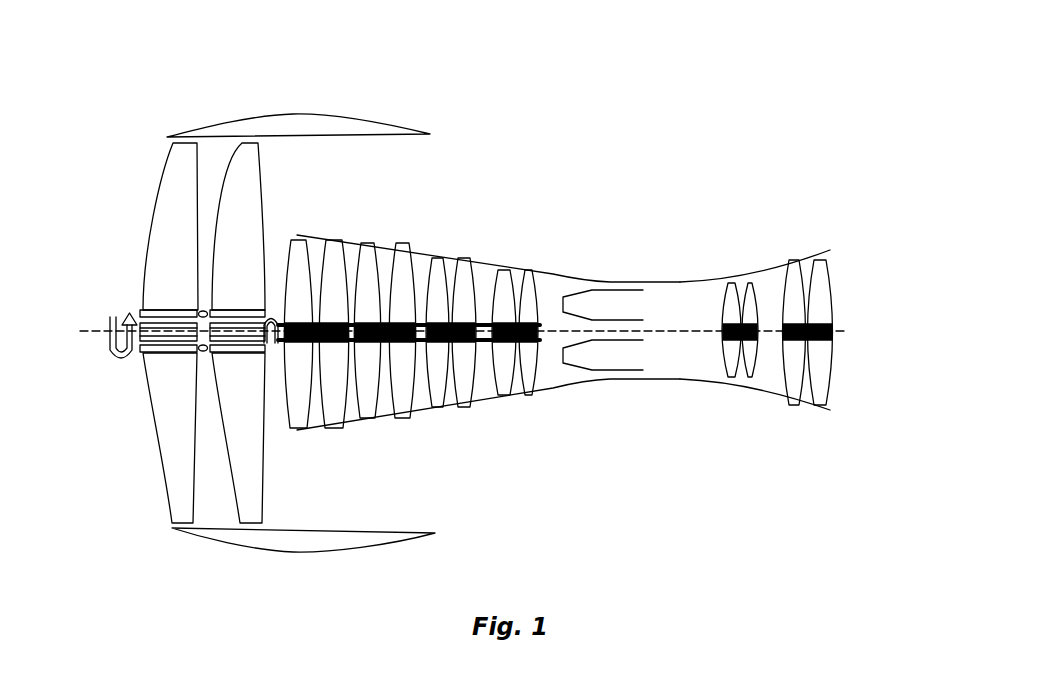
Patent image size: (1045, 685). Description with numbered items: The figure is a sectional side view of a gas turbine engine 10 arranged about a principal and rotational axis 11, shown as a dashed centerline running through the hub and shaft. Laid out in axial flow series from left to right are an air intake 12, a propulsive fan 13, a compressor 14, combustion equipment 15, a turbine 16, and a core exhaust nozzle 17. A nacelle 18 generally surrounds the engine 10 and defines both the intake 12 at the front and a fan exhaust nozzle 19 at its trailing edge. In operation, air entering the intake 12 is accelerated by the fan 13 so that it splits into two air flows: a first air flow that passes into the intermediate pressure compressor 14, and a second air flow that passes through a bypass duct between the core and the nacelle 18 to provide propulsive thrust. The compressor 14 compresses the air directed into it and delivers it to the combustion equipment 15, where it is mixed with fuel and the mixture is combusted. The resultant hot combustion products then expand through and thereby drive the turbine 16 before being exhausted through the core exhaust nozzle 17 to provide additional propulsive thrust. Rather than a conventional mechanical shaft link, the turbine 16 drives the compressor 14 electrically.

The gas turbine engine 10 is at (535, 127).
The principal and rotational axis 11 is at (698, 330).
The air intake 12 is at (120, 253).
The propulsive fan 13 is at (157, 200).
The compressor 14 is at (383, 239).
The combustion equipment 15 is at (618, 295).
The turbine 16 is at (750, 270).
The core exhaust nozzle 17 is at (842, 270).
The nacelle 18 is at (275, 112).
The fan exhaust nozzle 19 is at (410, 168).